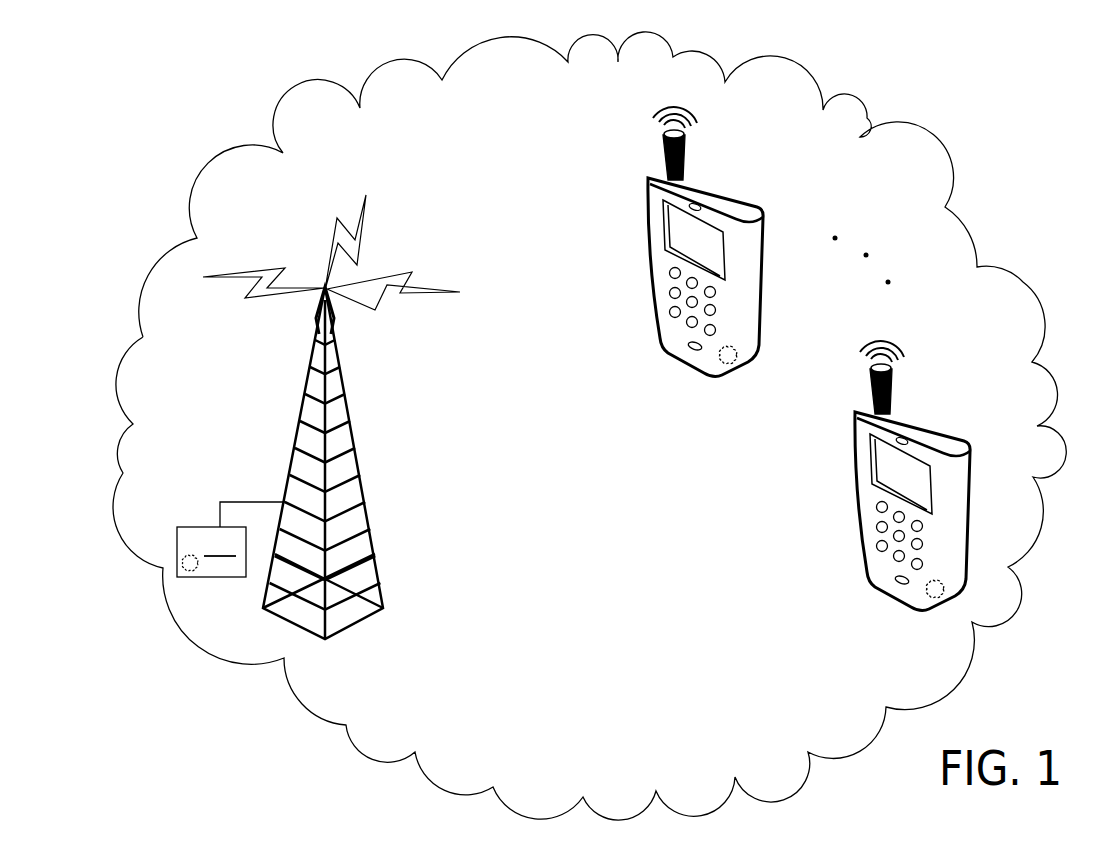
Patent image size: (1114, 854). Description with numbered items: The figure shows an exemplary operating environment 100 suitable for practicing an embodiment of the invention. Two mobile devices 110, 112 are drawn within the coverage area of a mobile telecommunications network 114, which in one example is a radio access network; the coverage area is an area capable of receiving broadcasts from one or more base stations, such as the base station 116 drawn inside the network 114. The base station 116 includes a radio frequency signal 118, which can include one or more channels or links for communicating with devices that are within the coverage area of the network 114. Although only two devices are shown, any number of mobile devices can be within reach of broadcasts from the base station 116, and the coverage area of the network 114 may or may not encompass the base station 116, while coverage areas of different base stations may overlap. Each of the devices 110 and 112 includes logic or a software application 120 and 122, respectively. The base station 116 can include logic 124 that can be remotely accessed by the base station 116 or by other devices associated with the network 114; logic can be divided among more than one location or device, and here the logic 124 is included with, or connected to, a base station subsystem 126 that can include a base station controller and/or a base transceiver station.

The operating environment 100 is at (1029, 136).
The mobile device 110 is at (712, 180).
The mobile device 112 is at (915, 412).
The network 114 is at (1023, 282).
The base station 116 is at (353, 435).
The RF signal 118 is at (320, 226).
The logic or software application 120 is at (738, 352).
The logic or software application 122 is at (951, 588).
The logic 124 is at (199, 568).
The base station subsystem 126 is at (231, 539).